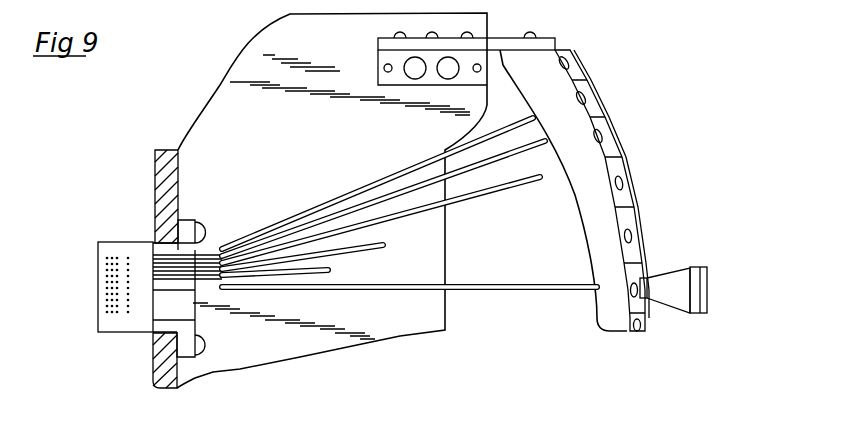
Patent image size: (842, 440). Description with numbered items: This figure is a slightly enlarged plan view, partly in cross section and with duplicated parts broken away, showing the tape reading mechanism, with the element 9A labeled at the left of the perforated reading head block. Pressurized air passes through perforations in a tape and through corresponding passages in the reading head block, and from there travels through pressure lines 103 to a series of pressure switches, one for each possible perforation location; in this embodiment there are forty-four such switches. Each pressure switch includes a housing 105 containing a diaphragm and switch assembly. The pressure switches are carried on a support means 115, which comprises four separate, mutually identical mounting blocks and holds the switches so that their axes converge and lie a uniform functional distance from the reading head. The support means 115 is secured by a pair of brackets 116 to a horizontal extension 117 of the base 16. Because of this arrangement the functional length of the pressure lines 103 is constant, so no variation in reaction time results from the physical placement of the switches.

The horizontal extension 117 is at (282, 28).
The brackets 116 is at (463, 77).
The base 16 is at (168, 149).
The connector box 9A is at (117, 247).
The pressure lines 103 is at (357, 227).
The support means 115 is at (642, 236).
The housing 105 is at (677, 311).